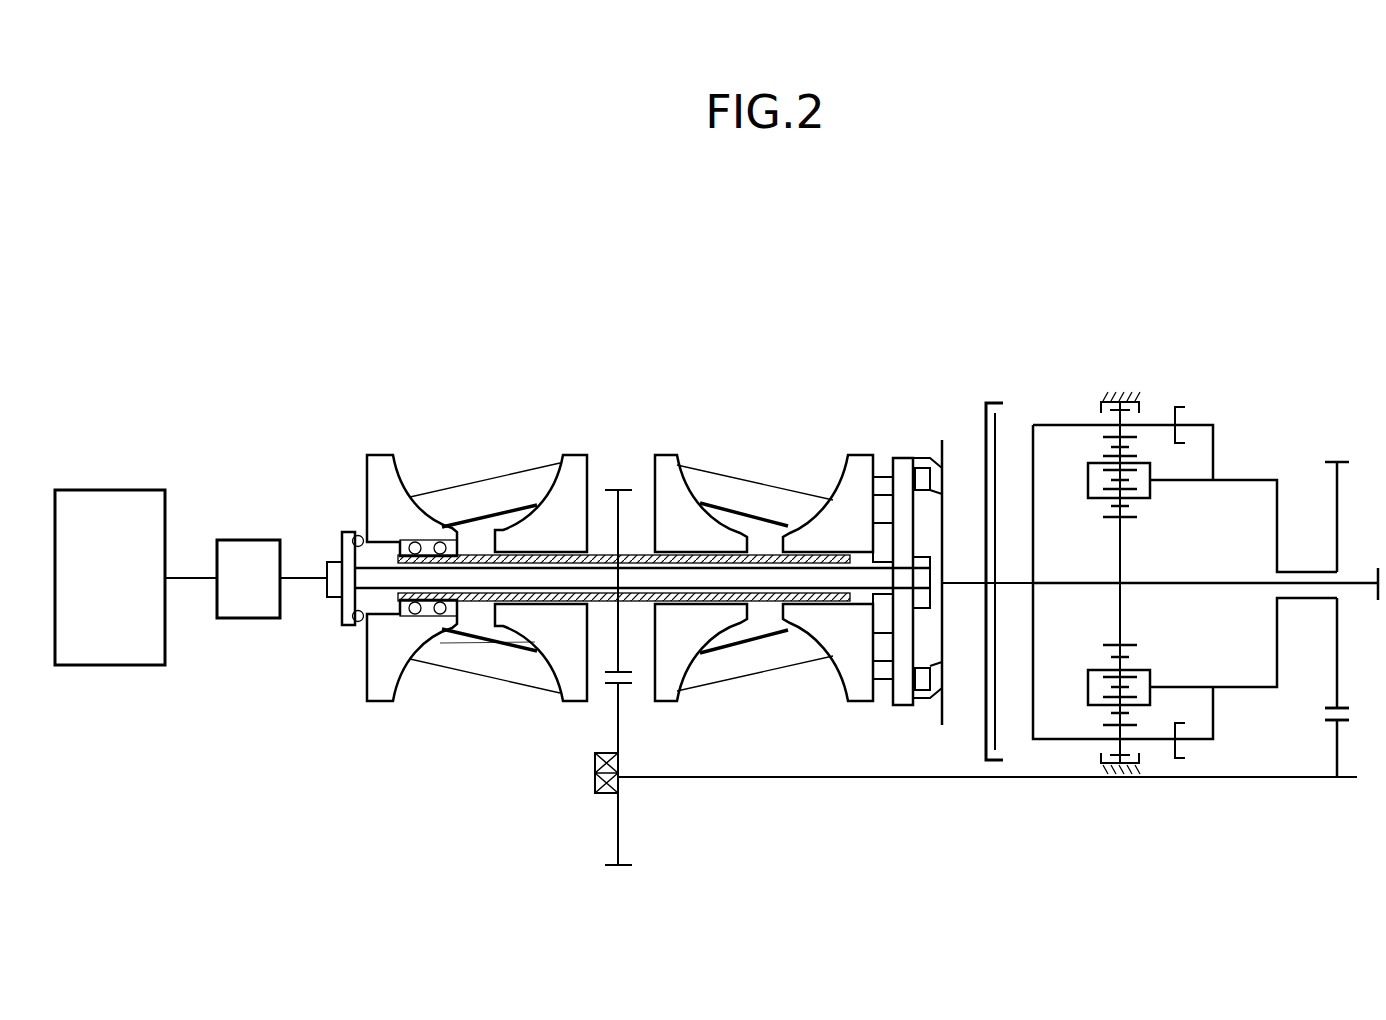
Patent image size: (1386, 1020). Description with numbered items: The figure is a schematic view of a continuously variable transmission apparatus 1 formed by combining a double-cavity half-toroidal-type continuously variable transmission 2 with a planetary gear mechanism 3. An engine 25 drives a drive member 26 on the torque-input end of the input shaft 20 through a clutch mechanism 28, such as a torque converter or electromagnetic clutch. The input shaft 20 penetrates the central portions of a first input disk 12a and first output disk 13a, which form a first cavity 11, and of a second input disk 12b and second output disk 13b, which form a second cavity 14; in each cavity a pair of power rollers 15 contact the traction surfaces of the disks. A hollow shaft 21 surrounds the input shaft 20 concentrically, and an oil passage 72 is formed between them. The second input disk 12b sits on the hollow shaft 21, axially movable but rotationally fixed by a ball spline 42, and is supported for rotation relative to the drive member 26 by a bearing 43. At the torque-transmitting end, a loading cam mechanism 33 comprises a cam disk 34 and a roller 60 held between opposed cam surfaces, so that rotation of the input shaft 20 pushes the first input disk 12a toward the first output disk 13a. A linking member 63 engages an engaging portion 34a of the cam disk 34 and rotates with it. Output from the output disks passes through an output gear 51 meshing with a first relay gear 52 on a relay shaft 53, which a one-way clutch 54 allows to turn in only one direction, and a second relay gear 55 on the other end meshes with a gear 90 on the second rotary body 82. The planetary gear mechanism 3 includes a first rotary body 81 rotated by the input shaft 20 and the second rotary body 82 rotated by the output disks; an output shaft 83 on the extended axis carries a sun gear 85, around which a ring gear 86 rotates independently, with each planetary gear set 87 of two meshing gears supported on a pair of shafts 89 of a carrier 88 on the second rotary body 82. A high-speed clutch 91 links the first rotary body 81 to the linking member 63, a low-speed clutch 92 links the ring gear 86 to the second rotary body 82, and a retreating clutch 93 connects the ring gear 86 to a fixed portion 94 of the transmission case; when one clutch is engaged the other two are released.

The continuously variable transmission apparatus 1 is at (755, 254).
The half-toroidal-type continuously variable transmission 2 is at (552, 354).
The planetary gear mechanism 3 is at (1283, 238).
The first cavity 11 is at (786, 395).
The first input disk 12a is at (842, 455).
The second input disk 12b is at (380, 455).
The first output disk 13a is at (668, 455).
The second output disk 13b is at (572, 455).
The second cavity 14 is at (466, 421).
The power rollers 15 is at (508, 492).
The input shaft 20 is at (482, 584).
The hollow shaft 21 is at (540, 640).
The engine 25 is at (118, 490).
The drive member 26 is at (342, 540).
The clutch mechanism 28 is at (248, 540).
The loading cam mechanism 33 is at (928, 403).
The cam disk 34 is at (905, 460).
The engaging portion 34a is at (943, 465).
The ball spline 42 is at (440, 545).
The bearing 43 is at (356, 622).
The output gear 51 is at (606, 490).
The first relay gear 52 is at (612, 838).
The relay shaft 53 is at (888, 778).
The one-way clutch 54 is at (594, 785).
The second relay gear 55 is at (1337, 777).
The roller 60 is at (882, 486).
The linking member 63 is at (943, 540).
The oil passage 72 is at (693, 555).
The first rotary body 81 is at (1005, 580).
The second rotary body 82 is at (1306, 572).
The output shaft 83 is at (1362, 578).
The sun gear 85 is at (1122, 558).
The ring gear 86 is at (1112, 430).
The planetary gear set 87 is at (1102, 490).
The carrier 88 is at (1098, 478).
The shafts 89 is at (1150, 458).
The gear 90 is at (1333, 490).
The high-speed clutch 91 is at (1000, 428).
The low-speed clutch 92 is at (1185, 425).
The retreating clutch 93 is at (1135, 412).
The fixed portion of the transmission case 94 is at (1125, 392).